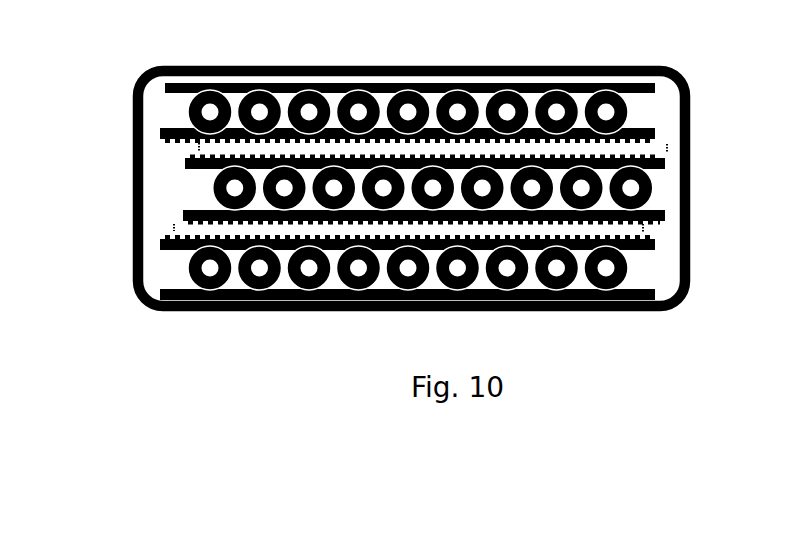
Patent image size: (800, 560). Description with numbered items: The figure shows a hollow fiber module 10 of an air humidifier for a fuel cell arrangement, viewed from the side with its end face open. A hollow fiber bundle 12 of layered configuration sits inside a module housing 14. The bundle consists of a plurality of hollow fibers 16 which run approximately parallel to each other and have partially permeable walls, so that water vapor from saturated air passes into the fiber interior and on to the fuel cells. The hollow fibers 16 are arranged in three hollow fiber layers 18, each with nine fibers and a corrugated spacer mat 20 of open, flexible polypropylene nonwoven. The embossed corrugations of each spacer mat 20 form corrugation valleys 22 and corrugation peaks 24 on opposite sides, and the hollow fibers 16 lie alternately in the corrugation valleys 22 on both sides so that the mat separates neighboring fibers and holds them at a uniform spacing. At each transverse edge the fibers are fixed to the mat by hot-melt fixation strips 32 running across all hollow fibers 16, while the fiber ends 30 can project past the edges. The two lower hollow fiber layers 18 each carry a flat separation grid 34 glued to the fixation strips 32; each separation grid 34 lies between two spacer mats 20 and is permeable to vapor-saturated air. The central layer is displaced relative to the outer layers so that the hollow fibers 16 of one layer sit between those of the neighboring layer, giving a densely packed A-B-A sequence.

The hollow fiber module 10 is at (692, 63).
The hollow fiber bundle 12 is at (160, 90).
The module housing 14 is at (135, 206).
The hollow fiber 16 is at (557, 92).
The hollow fiber layer 18 is at (160, 115).
The corrugated spacer mat 20 is at (633, 113).
The corrugation valley 22 is at (186, 100).
The corrugation peak 24 is at (358, 88).
The fiber end 30 is at (258, 299).
The fixation strip 32 is at (465, 188).
The separation grid 34 is at (200, 149).